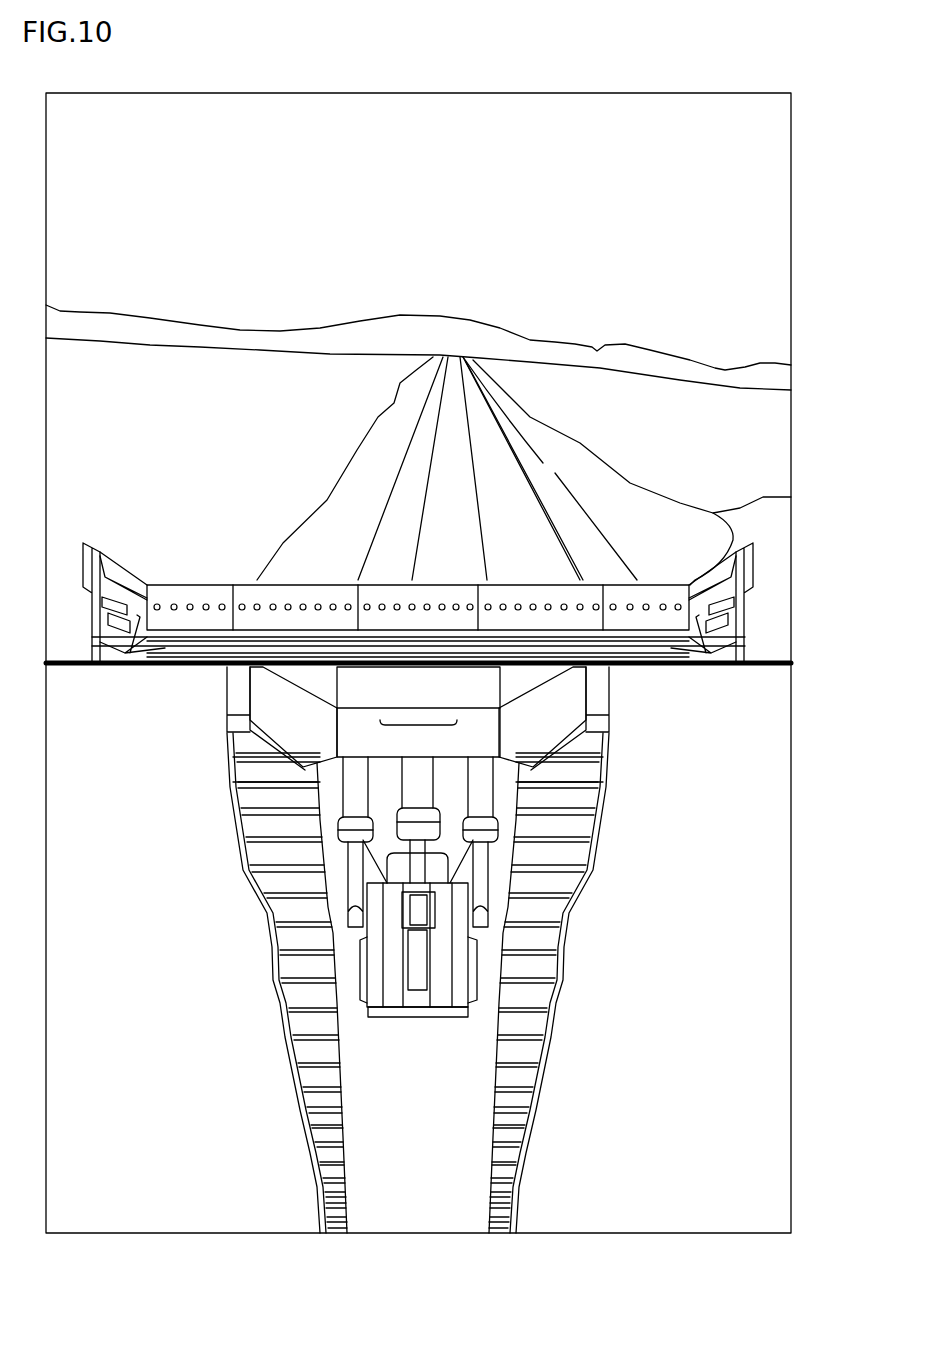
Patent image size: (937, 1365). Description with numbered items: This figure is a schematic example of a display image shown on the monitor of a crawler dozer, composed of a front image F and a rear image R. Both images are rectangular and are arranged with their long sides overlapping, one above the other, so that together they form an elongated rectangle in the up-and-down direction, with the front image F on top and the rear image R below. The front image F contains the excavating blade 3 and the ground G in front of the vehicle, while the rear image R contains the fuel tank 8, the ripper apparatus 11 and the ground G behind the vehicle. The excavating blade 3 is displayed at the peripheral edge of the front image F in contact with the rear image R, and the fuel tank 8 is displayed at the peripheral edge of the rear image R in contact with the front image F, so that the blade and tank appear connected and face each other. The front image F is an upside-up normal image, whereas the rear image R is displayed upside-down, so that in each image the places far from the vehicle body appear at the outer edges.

The front image F is at (270, 92).
The ground G is at (655, 450).
The excavating blade 3 is at (655, 598).
The fuel tank 8 is at (555, 730).
The ripper apparatus 11 is at (458, 952).
The rear image R is at (268, 1233).